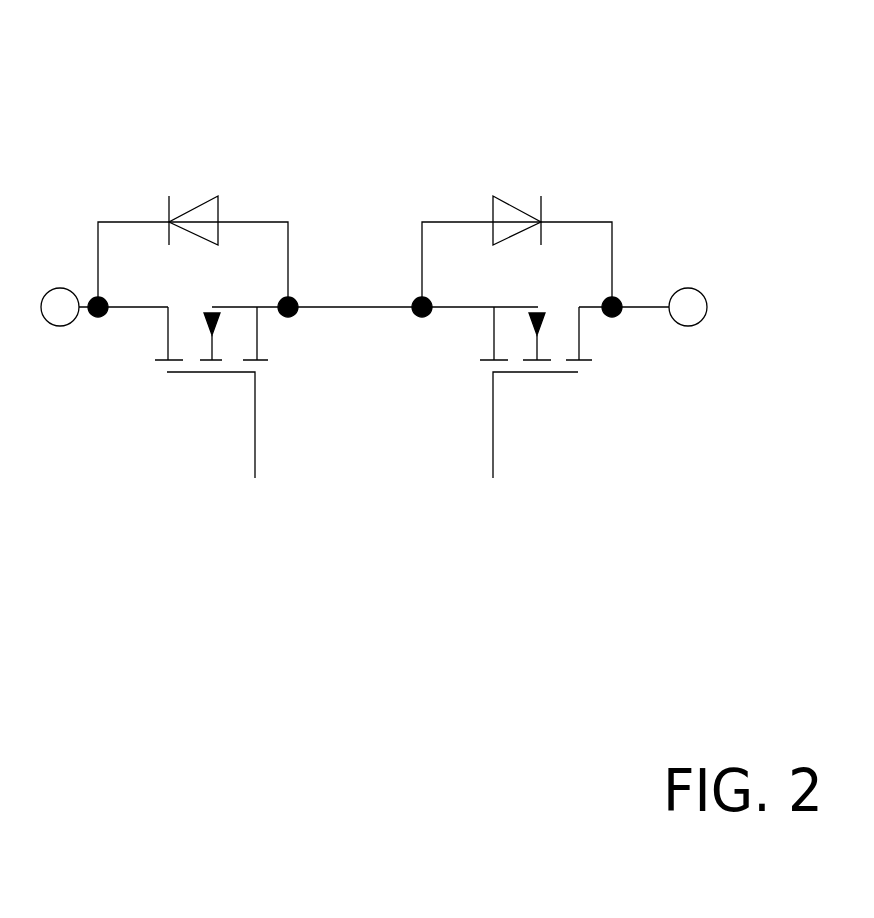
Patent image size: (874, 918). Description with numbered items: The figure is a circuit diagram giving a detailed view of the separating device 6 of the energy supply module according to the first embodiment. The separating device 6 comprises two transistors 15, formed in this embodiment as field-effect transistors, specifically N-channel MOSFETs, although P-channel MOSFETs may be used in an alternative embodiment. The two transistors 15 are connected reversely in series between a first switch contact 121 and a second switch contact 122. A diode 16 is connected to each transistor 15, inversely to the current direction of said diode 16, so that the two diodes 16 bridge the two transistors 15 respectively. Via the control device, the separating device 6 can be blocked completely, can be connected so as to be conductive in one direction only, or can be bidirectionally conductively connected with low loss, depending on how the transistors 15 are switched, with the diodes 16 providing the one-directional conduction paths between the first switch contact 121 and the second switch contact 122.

The separating device 6 is at (605, 147).
The first switch contact 121 is at (63, 292).
The second switch contact 122 is at (686, 292).
The diode 16 is at (194, 217).
The transistors 15 is at (223, 385).